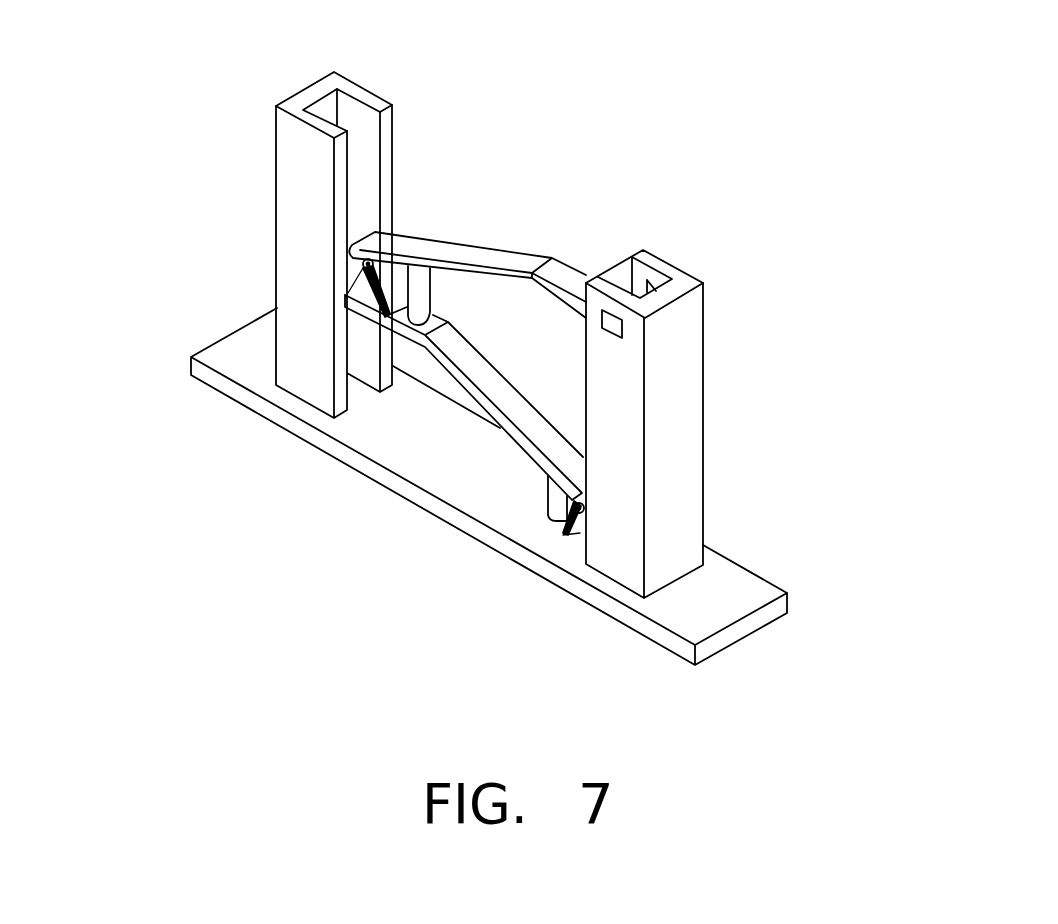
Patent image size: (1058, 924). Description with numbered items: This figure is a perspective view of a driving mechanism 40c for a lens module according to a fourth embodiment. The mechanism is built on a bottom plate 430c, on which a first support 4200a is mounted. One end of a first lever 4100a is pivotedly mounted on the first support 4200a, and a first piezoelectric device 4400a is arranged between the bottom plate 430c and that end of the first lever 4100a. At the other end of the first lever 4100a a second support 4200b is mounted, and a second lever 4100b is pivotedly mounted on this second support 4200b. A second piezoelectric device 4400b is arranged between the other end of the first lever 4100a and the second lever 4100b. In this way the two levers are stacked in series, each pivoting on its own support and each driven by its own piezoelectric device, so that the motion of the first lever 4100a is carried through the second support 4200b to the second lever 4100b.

The driving mechanism 40c is at (537, 47).
The bottom plate 430c is at (738, 592).
The first lever 4100a is at (450, 372).
The second lever 4100b is at (483, 257).
The first support 4200a is at (577, 535).
The second support 4200b is at (367, 288).
The first piezoelectric device 4400a is at (553, 498).
The second piezoelectric device 4400b is at (418, 287).